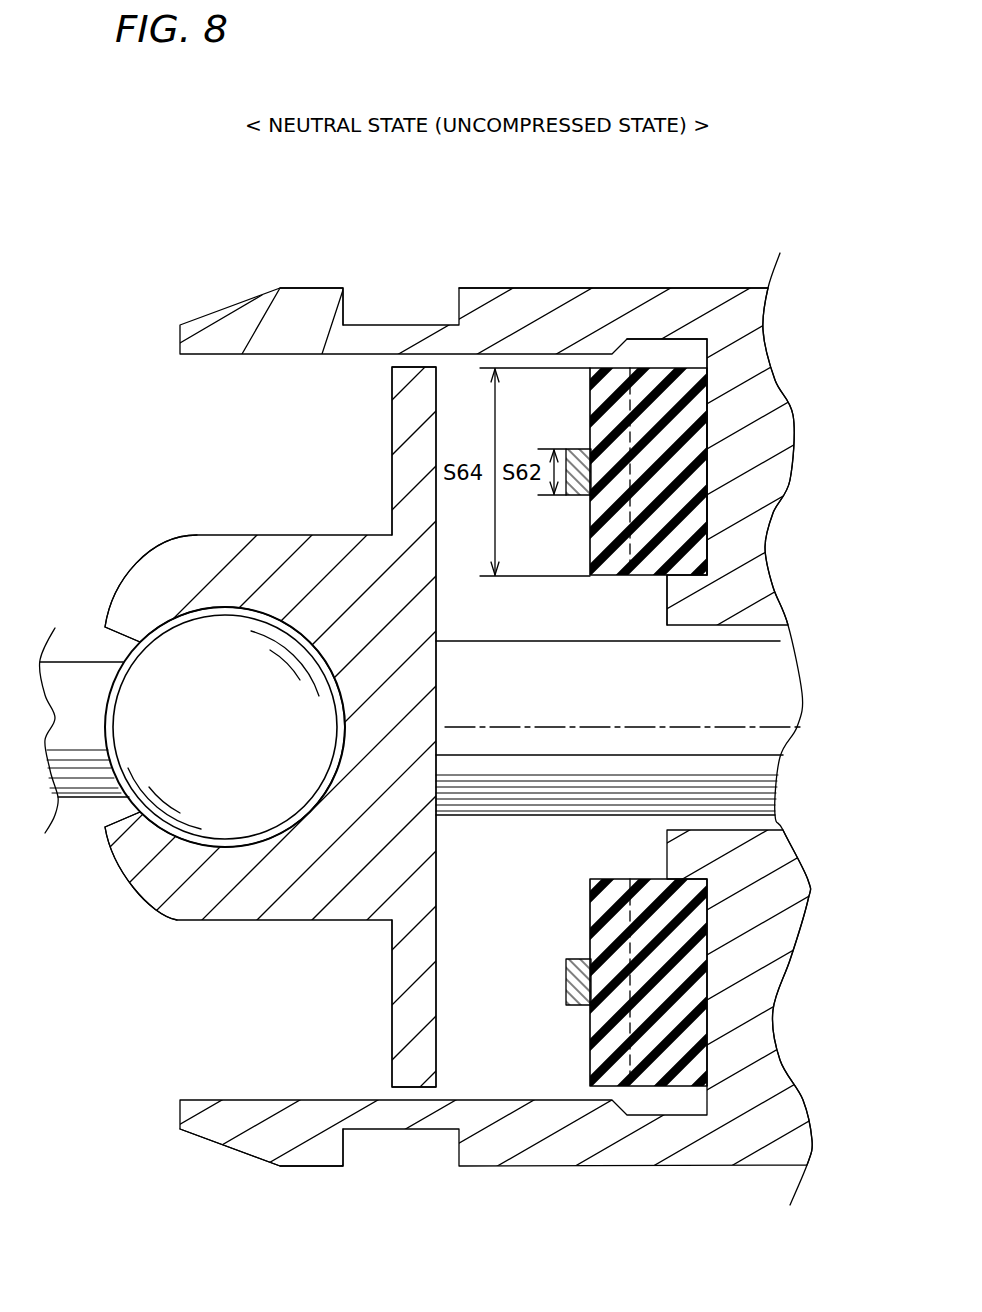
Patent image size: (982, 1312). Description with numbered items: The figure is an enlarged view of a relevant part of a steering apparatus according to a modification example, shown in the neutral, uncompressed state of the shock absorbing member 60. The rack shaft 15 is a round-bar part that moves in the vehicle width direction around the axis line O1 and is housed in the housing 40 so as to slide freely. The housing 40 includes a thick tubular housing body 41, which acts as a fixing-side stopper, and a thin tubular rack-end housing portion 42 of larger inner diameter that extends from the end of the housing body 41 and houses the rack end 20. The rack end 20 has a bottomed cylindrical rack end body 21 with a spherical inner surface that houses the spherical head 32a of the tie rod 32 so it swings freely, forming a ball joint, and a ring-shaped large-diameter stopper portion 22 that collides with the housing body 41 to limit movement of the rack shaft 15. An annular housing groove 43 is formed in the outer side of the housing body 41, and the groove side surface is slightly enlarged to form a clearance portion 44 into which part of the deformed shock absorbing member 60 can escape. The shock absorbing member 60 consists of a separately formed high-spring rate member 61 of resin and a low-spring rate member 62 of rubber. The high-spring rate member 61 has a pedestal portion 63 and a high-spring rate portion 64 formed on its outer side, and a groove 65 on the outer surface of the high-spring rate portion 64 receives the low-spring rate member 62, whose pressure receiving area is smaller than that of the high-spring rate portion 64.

The rack shaft 15 is at (741, 828).
The rack end 20 is at (296, 528).
The rack end body 21 is at (156, 556).
The stopper portion 22 is at (392, 447).
The tie rod 32 is at (74, 660).
The spherical head 32a is at (230, 822).
The housing 40 is at (730, 283).
The housing body 41 is at (755, 283).
The rack-end housing portion 42 is at (323, 283).
The housing groove 43 is at (700, 462).
The clearance portion 44 is at (689, 345).
The shock absorbing member 60 is at (628, 684).
The high-spring rate member 61 is at (641, 704).
The low-spring rate member 62 is at (588, 470).
The pedestal portion 63 is at (662, 373).
The high-spring rate portion 64 is at (612, 395).
The groove 65 is at (712, 418).
The axis line O1 is at (786, 727).